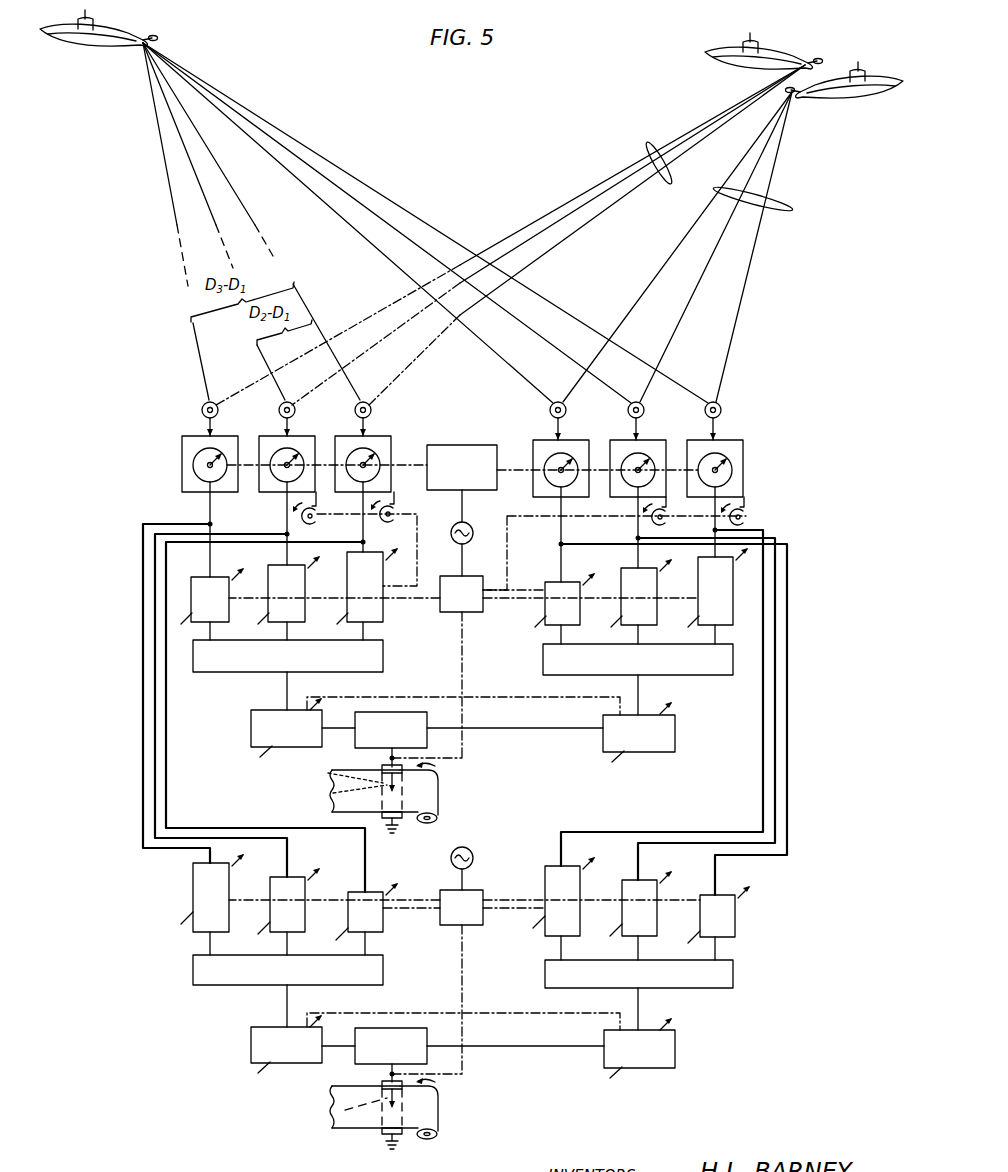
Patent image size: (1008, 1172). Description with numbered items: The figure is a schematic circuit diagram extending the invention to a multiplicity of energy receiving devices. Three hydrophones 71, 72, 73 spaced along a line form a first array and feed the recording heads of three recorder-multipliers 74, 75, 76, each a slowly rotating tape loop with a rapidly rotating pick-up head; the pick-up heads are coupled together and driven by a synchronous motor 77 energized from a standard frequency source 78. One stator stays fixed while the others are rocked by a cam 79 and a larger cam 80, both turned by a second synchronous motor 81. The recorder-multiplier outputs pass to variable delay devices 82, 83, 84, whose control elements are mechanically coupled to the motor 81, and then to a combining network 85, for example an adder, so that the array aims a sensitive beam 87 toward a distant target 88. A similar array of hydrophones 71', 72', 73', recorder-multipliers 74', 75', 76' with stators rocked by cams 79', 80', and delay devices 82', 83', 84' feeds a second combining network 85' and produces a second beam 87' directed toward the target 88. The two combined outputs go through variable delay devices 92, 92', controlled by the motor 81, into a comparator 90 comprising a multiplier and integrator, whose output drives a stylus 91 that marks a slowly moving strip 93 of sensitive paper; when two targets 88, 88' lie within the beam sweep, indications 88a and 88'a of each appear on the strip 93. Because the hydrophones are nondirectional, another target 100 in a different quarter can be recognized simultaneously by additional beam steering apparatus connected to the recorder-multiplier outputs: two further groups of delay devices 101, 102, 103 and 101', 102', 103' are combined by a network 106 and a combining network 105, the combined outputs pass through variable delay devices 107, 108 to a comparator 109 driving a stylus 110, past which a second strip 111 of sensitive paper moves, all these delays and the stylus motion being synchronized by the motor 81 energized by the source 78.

The hydrophone 71 is at (561, 406).
The hydrophone 72 is at (636, 406).
The hydrophone 73 is at (729, 406).
The hydrophone 71' is at (224, 403).
The hydrophone 72' is at (300, 403).
The hydrophone 73' is at (373, 403).
The recorder-multiplier 74 is at (566, 459).
The recorder-multiplier 75 is at (643, 459).
The recorder-multiplier 76 is at (721, 459).
The recorder-multiplier 74' is at (217, 455).
The recorder-multiplier 75' is at (294, 455).
The recorder-multiplier 76' is at (370, 455).
The synchronous motor 77 is at (458, 438).
The standard frequency source 78 is at (471, 523).
The cam 79 is at (671, 511).
The larger cam 80 is at (753, 511).
The cam 79' is at (320, 518).
The cam 80' is at (400, 507).
The second synchronous motor 81 is at (470, 576).
The variable delay device 82 is at (560, 588).
The variable delay device 83 is at (637, 588).
The variable delay device 84 is at (711, 587).
The delay device 82' is at (208, 587).
The delay device 83' is at (284, 584).
The delay device 84' is at (372, 580).
The combining network 85 is at (646, 672).
The second combining network 85' is at (310, 656).
The beam 87 is at (767, 203).
The beam 87' is at (650, 154).
The target 88 is at (764, 42).
The target 88' is at (845, 97).
The indication 88a is at (340, 790).
The indication 88'a is at (329, 772).
The comparator 90 is at (400, 712).
The stylus 91 is at (387, 778).
The variable delay device 92 is at (263, 727).
The variable delay device 92' is at (660, 732).
The strip of sensitive paper 93 is at (371, 792).
The target 100 is at (104, 50).
The delay device 101 is at (554, 895).
The delay device 102 is at (638, 895).
The delay device 103 is at (719, 899).
The delay device 101' is at (199, 893).
The delay device 102' is at (285, 894).
The delay device 103' is at (364, 897).
The combining network 105 is at (733, 975).
The network 106 is at (383, 970).
The variable delay device 107 is at (675, 1050).
The variable delay device 108 is at (251, 1045).
The comparator 109 is at (392, 1028).
The stylus 110 is at (393, 1092).
The second strip of sensitive paper 111 is at (418, 1110).